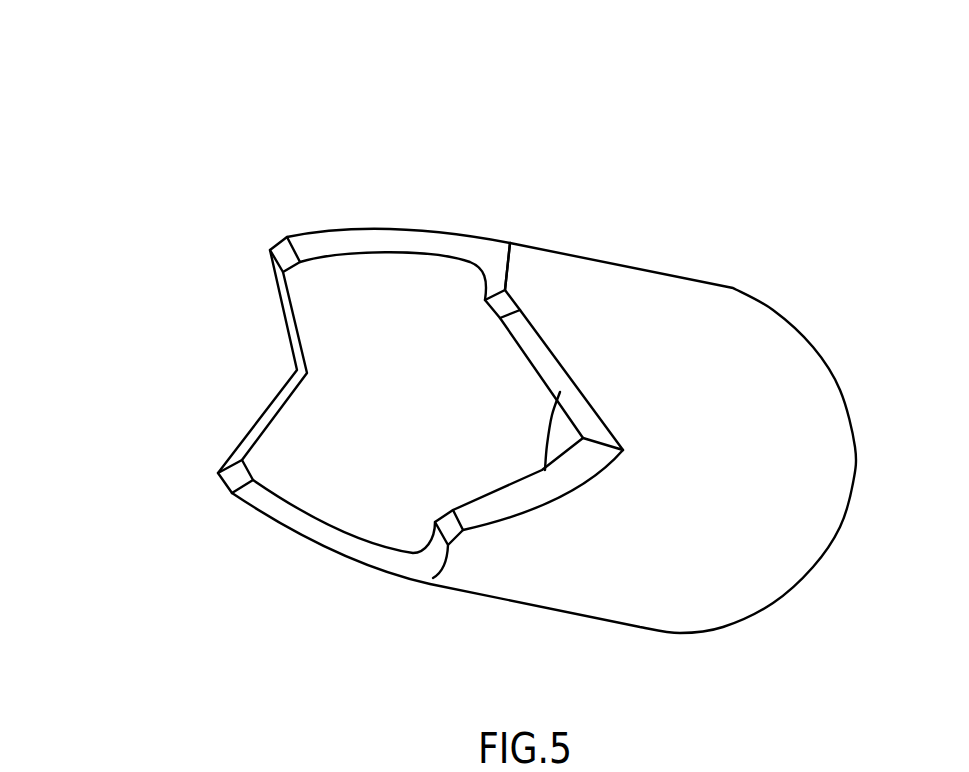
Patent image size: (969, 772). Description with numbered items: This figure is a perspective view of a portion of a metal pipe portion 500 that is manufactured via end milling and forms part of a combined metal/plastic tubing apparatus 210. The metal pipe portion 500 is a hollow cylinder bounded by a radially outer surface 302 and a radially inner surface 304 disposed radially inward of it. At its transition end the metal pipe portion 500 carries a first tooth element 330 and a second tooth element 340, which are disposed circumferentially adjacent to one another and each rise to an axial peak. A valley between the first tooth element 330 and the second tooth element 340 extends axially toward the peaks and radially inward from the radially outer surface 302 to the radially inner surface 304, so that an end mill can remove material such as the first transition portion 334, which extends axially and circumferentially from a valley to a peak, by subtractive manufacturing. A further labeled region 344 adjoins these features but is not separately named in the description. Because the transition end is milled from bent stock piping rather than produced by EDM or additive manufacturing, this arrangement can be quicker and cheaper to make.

The combined metal/plastic tubing apparatus 210 is at (175, 214).
The metal pipe portion 500 is at (315, 164).
The radially outer surface 302 is at (642, 581).
The radially inner surface 304 is at (439, 447).
The first tooth element 330 is at (483, 553).
The first transition portion 334 is at (527, 500).
The second tooth element 340 is at (537, 290).
The inner sidewall surface 344 is at (553, 360).